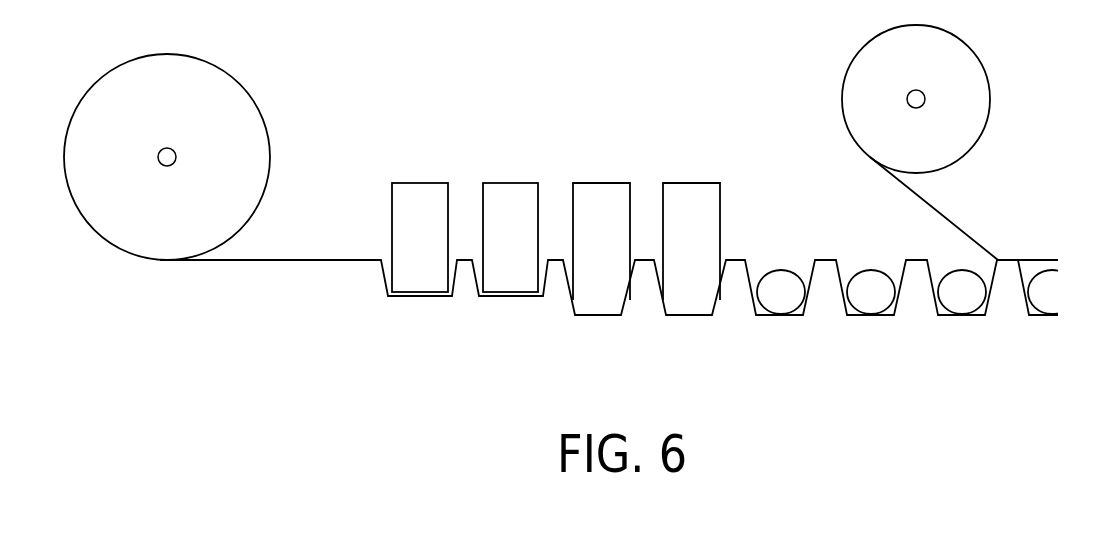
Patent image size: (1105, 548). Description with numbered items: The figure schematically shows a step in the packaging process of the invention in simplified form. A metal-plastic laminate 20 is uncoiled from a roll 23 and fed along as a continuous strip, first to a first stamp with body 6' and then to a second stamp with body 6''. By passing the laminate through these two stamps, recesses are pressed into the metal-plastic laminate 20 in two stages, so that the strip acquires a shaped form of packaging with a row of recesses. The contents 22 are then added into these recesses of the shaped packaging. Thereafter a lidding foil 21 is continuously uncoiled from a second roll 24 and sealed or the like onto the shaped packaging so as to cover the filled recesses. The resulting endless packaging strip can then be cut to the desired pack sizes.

The metal-plastic laminate 20 is at (307, 260).
The lidding foil 21 is at (935, 210).
The contents 22 is at (782, 315).
The roll 23 is at (228, 75).
The roll 24 is at (857, 78).
The first stamp body 6' is at (465, 279).
The second stamp body 6'' is at (646, 279).